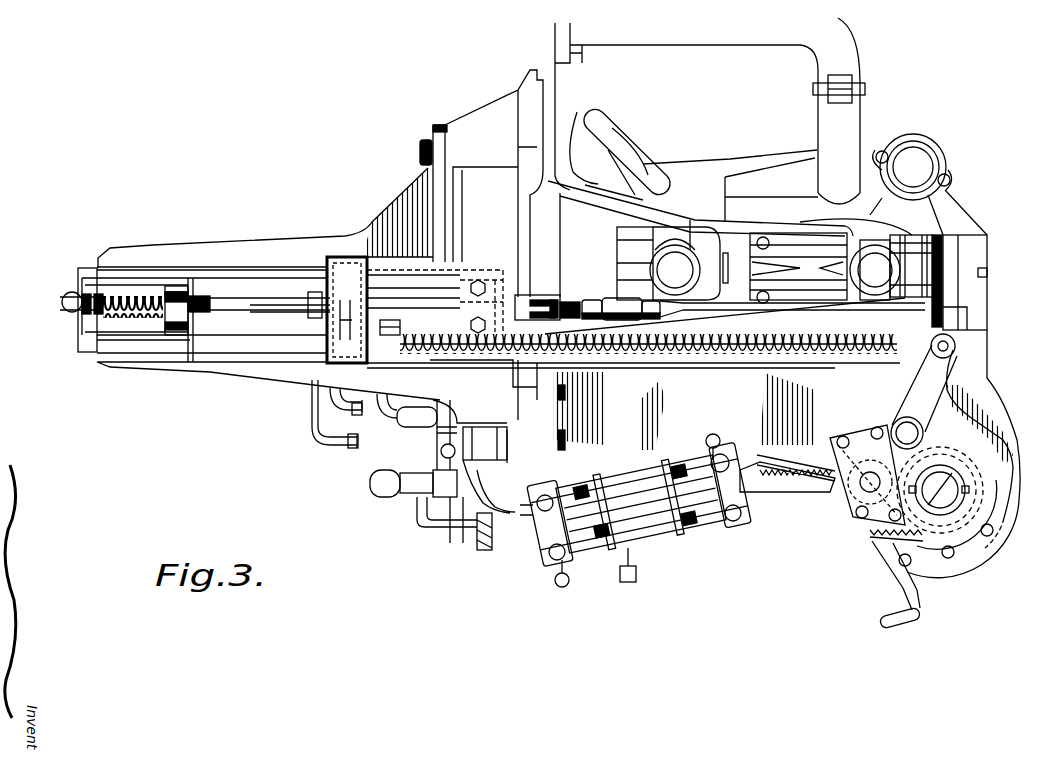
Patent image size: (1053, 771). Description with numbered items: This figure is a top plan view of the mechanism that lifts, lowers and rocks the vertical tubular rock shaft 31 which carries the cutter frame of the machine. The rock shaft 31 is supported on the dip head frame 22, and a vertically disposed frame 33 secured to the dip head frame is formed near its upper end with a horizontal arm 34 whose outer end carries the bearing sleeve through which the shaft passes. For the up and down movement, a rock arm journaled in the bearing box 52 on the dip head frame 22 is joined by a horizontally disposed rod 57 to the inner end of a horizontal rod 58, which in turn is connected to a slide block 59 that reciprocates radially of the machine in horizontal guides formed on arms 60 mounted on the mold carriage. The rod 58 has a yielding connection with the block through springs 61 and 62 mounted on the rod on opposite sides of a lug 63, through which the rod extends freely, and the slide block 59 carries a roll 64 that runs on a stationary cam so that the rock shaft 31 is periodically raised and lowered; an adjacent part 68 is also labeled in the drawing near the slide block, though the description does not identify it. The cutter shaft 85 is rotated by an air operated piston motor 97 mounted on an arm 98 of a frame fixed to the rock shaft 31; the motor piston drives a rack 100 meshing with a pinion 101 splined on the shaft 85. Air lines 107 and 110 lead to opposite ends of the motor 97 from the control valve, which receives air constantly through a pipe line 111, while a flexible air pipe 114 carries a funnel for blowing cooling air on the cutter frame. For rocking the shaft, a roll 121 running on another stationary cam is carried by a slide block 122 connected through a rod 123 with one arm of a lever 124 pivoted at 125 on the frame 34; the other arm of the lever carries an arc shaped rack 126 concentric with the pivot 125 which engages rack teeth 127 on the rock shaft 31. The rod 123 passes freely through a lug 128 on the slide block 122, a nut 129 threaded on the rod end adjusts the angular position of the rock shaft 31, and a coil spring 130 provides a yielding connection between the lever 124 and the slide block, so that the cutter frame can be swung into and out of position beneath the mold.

The dip head frame 22 is at (925, 152).
The tubular rock shaft 31 is at (943, 507).
The vertically disposed frame 33 is at (541, 420).
The horizontal arm 34 is at (684, 411).
The bearing box 52 is at (946, 284).
The horizontally disposed rod 57 is at (776, 306).
The horizontal rod 58 is at (283, 308).
The slide block 59 is at (84, 352).
The arms 60 is at (238, 373).
The spring 61 is at (133, 314).
The spring 62 is at (210, 299).
The lug 63 is at (168, 280).
The roll 64 is at (66, 296).
The piston head 68 is at (183, 292).
The shaft 85 is at (860, 488).
The air operated piston motor 97 is at (597, 562).
The arm 98 is at (777, 517).
The rack 100 is at (796, 463).
The pinion 101 is at (826, 512).
The air line 107 is at (707, 438).
The air line 110 is at (558, 585).
The pipe line 111 is at (403, 427).
The flexible air pipe 114 is at (480, 553).
The roll 121 is at (312, 302).
The slide block 122 is at (312, 287).
The rod 123 is at (628, 356).
The lever 124 is at (940, 372).
The pivot 125 is at (903, 430).
The arc shaped rack 126 is at (923, 523).
The rack teeth 127 is at (1008, 470).
The lug 128 is at (396, 328).
The nut 129 is at (347, 310).
The coil spring 130 is at (683, 356).